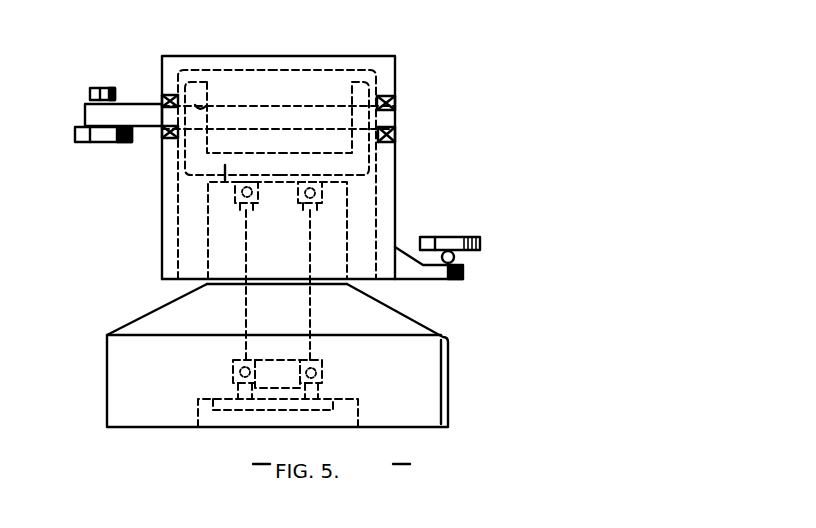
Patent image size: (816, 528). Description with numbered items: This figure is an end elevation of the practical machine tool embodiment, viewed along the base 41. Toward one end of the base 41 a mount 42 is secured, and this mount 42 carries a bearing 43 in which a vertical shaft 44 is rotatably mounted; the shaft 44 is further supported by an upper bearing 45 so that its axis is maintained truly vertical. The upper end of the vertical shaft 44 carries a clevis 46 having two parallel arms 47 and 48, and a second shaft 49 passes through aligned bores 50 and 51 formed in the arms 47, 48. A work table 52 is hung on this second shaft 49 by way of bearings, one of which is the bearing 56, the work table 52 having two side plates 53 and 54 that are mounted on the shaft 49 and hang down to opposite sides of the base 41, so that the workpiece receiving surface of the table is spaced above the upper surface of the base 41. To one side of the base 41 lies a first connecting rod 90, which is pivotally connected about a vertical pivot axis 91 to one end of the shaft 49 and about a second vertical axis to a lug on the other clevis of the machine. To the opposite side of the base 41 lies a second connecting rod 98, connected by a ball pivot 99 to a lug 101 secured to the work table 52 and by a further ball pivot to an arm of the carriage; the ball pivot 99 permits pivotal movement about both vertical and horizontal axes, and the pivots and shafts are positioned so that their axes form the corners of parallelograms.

The base 41 is at (432, 375).
The mount 42 is at (200, 416).
The bearing 43 is at (322, 368).
The vertical shaft 44 is at (243, 358).
The upper bearing 45 is at (333, 271).
The clevis 46 is at (235, 271).
The arm 47 is at (384, 158).
The arm 48 is at (197, 135).
The second shaft 49 is at (292, 107).
The bore 50 is at (384, 96).
The bore 51 is at (206, 105).
The work table 52 is at (359, 57).
The side plate 53 is at (388, 183).
The side plate 54 is at (170, 193).
The bearing 56 is at (163, 98).
The first connecting rod 90 is at (83, 142).
The vertical pivot axis 91 is at (93, 89).
The second connecting rod 98 is at (447, 238).
The ball pivot 99 is at (455, 259).
The lug 101 is at (417, 272).